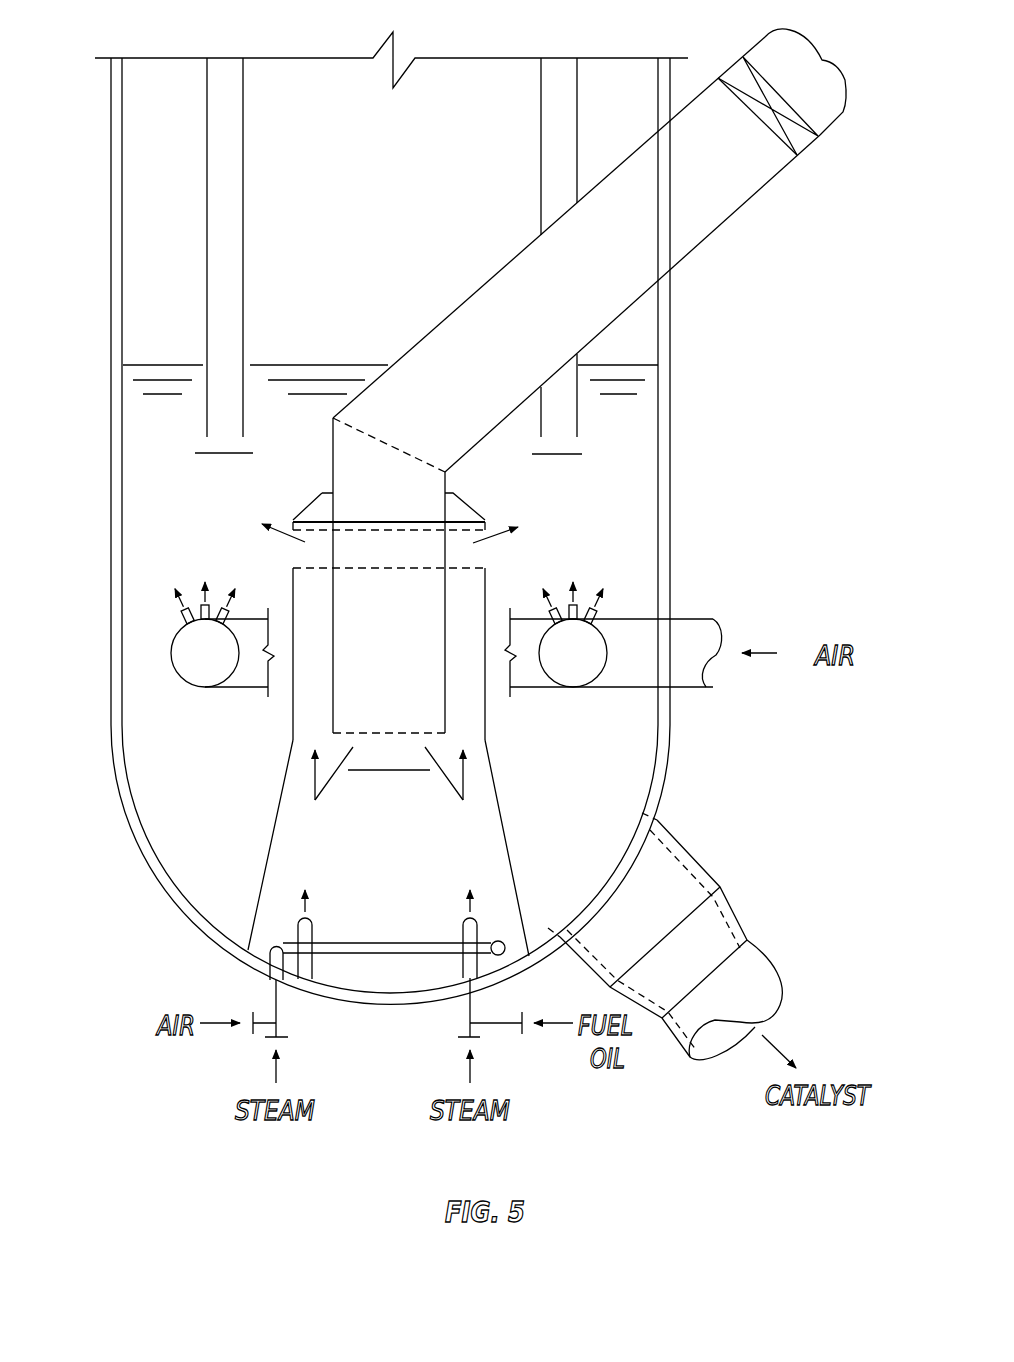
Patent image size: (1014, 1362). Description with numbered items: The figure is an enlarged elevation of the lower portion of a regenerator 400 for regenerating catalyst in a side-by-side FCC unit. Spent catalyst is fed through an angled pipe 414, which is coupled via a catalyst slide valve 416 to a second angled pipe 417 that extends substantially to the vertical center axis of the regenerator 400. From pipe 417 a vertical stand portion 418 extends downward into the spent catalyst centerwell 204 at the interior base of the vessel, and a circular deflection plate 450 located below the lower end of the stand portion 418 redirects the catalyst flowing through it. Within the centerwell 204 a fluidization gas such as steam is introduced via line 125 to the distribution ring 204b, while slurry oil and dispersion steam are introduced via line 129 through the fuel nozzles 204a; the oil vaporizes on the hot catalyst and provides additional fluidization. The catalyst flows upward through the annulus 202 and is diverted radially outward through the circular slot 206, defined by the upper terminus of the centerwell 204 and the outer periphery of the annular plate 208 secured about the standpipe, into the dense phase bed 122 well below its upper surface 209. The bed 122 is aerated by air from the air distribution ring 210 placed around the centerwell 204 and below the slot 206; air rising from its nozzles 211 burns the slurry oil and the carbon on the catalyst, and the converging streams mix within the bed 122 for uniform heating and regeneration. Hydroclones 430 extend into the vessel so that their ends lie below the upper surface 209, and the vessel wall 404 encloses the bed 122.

The regenerator 400 is at (878, 439).
The regenerator vessel wall 404 is at (668, 413).
The dense phase bed 122 is at (648, 523).
The upper surface 209 is at (128, 363).
The hydroclones 430 is at (213, 407).
The angled pipe 417 is at (603, 287).
The angled pipe 414 is at (760, 58).
The catalyst slide valve 416 is at (800, 134).
The vertical stand portion 418 is at (355, 467).
The circular slot 206 is at (297, 510).
The annular plate 208 is at (483, 512).
The spent catalyst centerwell 204 is at (490, 590).
The annulus 202 is at (305, 693).
The circular deflection plate 450 is at (390, 770).
The air distribution ring 210 is at (202, 662).
The nozzles 211 is at (600, 610).
The nozzles 204a is at (300, 918).
The distribution ring 204b is at (335, 940).
The line 125 is at (275, 1007).
The line 129 is at (475, 1010).